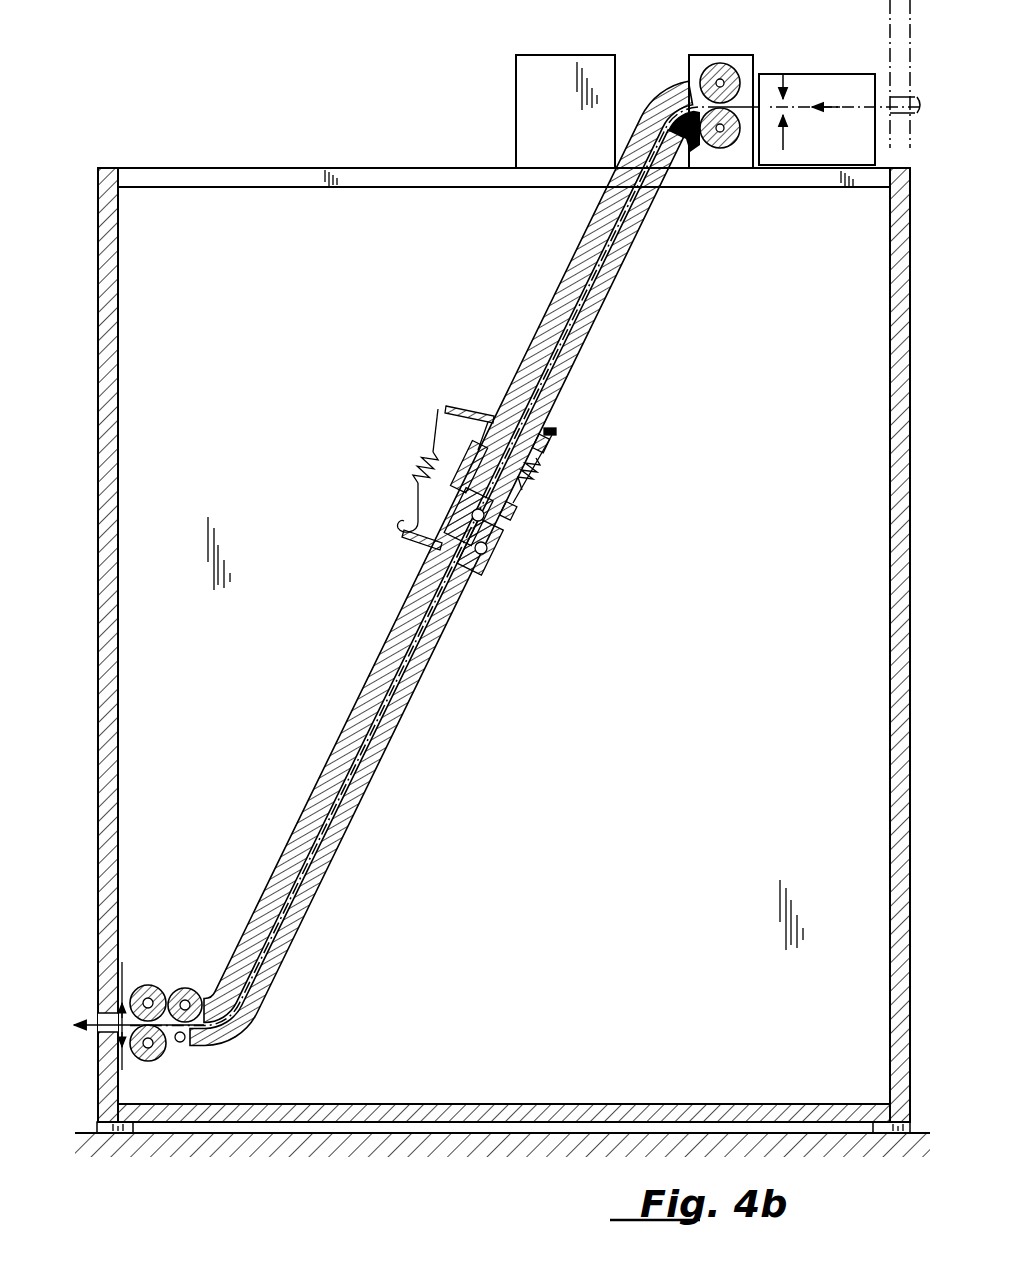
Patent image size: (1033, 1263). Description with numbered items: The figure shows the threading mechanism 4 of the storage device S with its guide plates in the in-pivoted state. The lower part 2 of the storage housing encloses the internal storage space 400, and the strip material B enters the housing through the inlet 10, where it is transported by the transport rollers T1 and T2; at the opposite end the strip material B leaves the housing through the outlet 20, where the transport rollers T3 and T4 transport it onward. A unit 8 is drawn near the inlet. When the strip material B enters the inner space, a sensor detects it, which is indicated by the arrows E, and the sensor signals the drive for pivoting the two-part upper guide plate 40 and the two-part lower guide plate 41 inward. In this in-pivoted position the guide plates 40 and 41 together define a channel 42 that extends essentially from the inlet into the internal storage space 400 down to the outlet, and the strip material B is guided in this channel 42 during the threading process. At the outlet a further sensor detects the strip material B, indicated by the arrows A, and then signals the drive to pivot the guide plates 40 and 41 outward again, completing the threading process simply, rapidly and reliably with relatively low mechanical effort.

The lower part 2 is at (225, 165).
The threading mechanism 4 is at (531, 350).
The drive unit 8 is at (533, 102).
The inlet 10 is at (905, 100).
The outlet 20 is at (100, 1032).
The upper guide plate 40 is at (584, 268).
The lower guide plate 41 is at (596, 316).
The channel 42 is at (396, 650).
The internal storage space 400 is at (292, 367).
The storage device S is at (333, 68).
The arrows indicating sensor detection at outlet A is at (122, 990).
The strip material B is at (606, 253).
The arrows indicating sensor detection at inlet E is at (783, 72).
The transport roller T1 is at (711, 64).
The transport roller T2 is at (725, 150).
The transport roller T3 is at (160, 1058).
The transport roller T4 is at (154, 985).